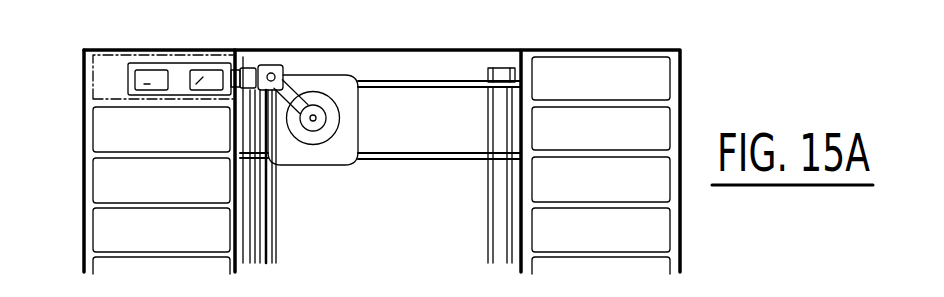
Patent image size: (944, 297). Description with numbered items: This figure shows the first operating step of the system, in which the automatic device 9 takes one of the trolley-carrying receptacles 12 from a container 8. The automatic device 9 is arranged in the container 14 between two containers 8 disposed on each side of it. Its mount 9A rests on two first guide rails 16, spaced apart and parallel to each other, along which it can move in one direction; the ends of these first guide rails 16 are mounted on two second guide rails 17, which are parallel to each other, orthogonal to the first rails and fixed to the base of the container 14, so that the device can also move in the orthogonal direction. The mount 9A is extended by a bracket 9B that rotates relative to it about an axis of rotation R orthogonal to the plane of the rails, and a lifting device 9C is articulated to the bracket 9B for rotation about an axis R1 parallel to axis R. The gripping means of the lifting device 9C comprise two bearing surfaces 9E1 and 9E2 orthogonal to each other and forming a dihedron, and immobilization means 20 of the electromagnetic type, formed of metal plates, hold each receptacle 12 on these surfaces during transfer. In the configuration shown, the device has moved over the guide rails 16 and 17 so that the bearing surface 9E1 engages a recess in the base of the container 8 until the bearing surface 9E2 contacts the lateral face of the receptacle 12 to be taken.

The container 8 is at (684, 106).
The automatic device 9 is at (323, 115).
The mount 9A is at (337, 167).
The bracket 9B is at (300, 142).
The lifting device 9C is at (211, 52).
The bearing surface 9E1 is at (173, 76).
The bearing surface 9E2 is at (213, 91).
The receptacle 12 is at (84, 66).
The container 14 is at (429, 50).
The first guide rails 16 is at (424, 150).
The second guide rails 17 is at (262, 251).
The immobilization means 20 is at (199, 80).
The axis of rotation R is at (316, 118).
The axis R1 is at (271, 73).